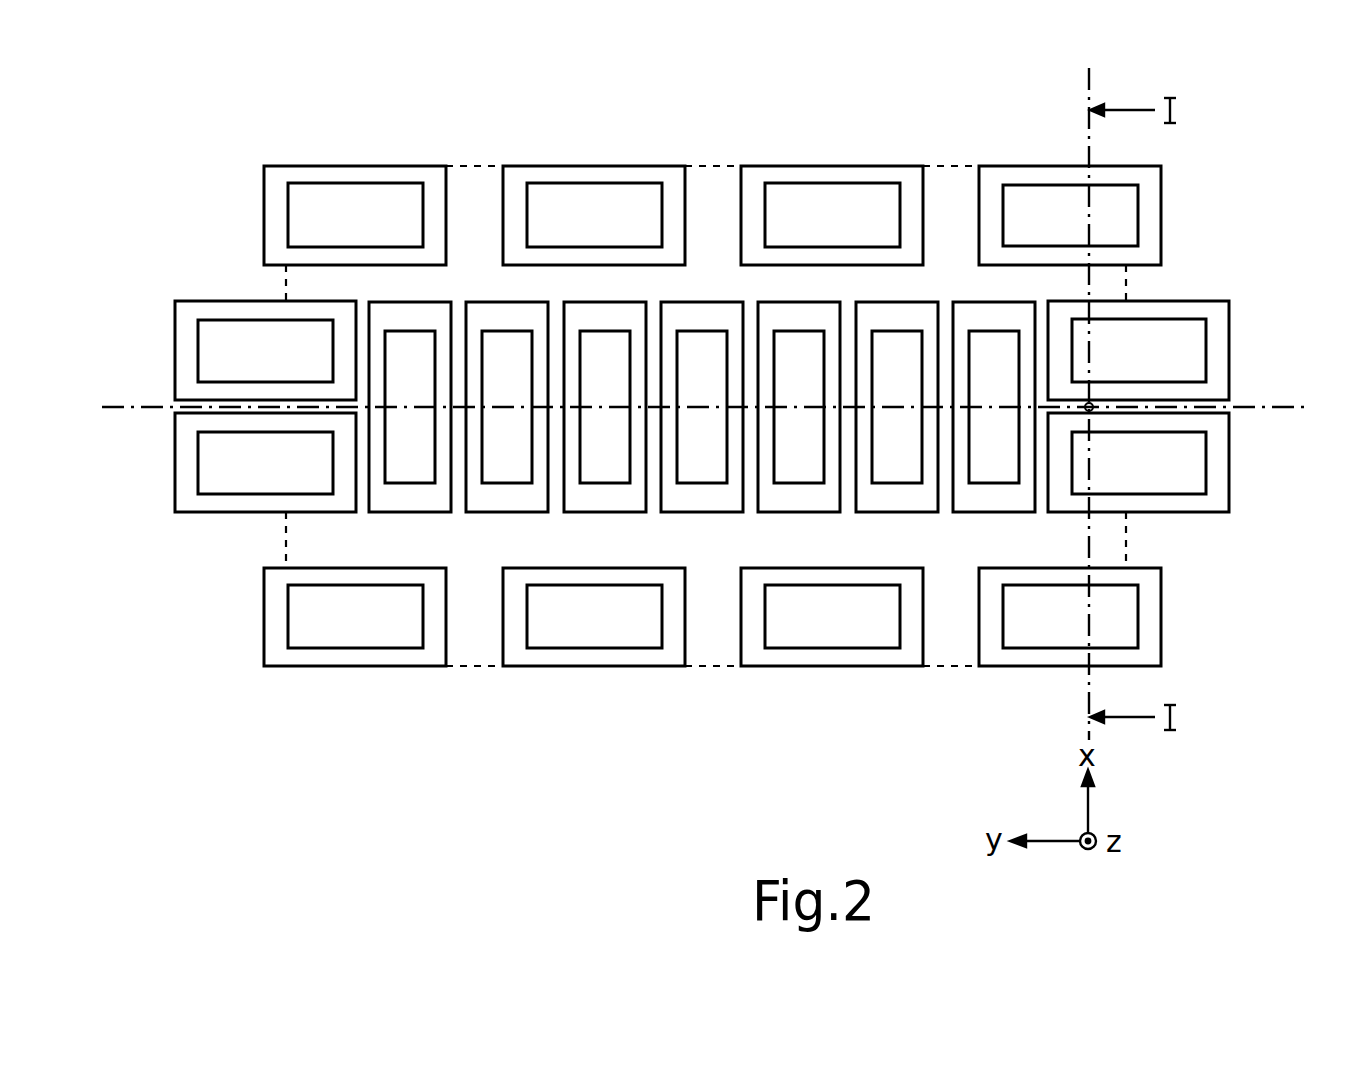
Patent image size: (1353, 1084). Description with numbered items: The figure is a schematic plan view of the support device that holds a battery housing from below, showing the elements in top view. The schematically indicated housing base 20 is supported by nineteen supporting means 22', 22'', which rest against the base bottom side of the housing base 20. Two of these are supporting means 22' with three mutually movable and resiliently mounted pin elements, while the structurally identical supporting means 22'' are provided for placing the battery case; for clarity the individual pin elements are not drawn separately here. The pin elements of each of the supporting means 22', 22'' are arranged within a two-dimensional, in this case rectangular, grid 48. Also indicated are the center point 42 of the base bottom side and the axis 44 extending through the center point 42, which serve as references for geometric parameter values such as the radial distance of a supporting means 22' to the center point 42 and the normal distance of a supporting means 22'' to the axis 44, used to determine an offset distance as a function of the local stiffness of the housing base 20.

The housing base 20 is at (966, 283).
The supporting means 22' is at (1186, 406).
The supporting means 22'' is at (1120, 416).
The center point 42 is at (1083, 410).
The axis 44 is at (145, 407).
The rectangular grid 48 is at (1063, 232).